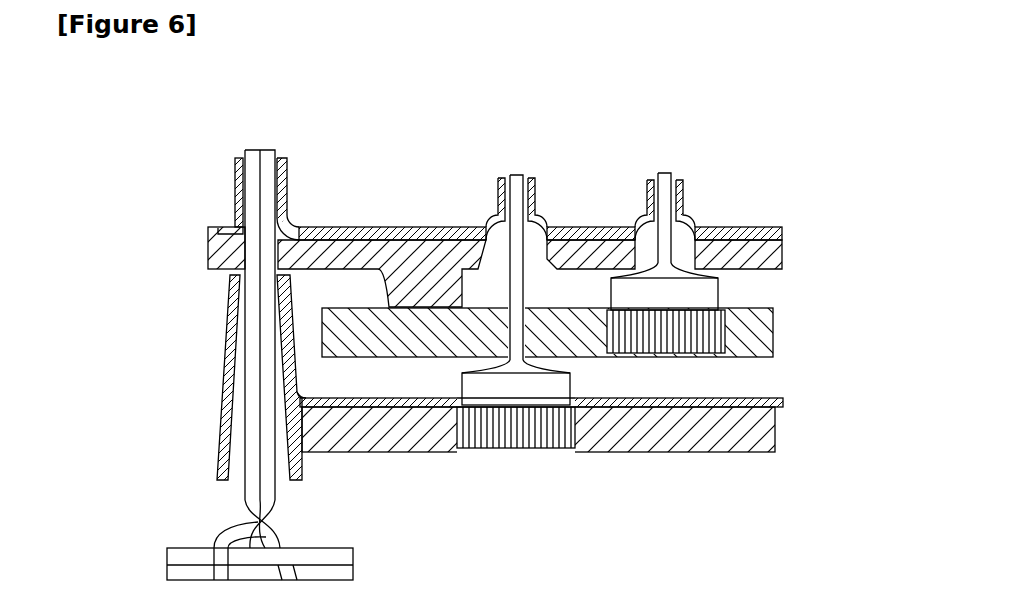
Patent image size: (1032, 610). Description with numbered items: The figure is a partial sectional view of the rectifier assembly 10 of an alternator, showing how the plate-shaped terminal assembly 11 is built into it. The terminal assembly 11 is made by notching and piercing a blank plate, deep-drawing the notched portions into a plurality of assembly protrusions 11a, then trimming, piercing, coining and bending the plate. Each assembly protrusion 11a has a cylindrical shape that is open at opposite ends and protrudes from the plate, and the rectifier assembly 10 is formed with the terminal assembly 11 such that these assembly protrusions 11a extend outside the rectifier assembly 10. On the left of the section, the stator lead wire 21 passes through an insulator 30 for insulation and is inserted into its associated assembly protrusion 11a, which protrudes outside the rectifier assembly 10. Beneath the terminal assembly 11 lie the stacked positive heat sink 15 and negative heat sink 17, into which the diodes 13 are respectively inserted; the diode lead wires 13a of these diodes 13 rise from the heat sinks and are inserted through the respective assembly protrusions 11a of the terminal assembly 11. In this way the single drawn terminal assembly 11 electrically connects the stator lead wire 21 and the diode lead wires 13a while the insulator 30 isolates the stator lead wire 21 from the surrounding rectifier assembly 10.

The rectifier assembly 10 is at (556, 208).
The terminal assembly 11 is at (757, 227).
The assembly protrusion 11a is at (541, 192).
The diode 13 is at (734, 224).
The diode lead wire 13a is at (665, 168).
The positive heat sink 15 is at (760, 335).
The negative heat sink 17 is at (752, 424).
The stator lead wire 21 is at (268, 147).
The insulator 30 is at (212, 398).